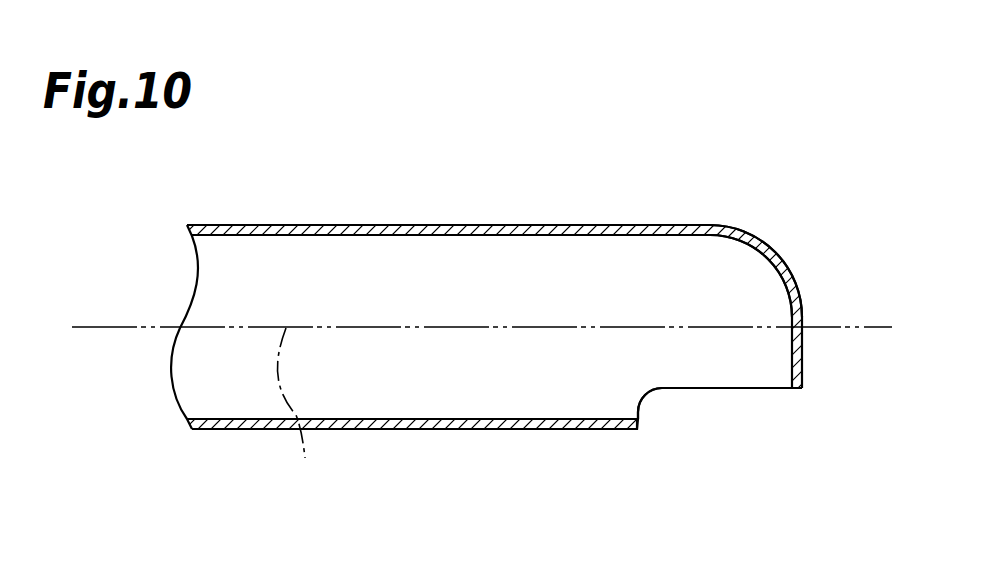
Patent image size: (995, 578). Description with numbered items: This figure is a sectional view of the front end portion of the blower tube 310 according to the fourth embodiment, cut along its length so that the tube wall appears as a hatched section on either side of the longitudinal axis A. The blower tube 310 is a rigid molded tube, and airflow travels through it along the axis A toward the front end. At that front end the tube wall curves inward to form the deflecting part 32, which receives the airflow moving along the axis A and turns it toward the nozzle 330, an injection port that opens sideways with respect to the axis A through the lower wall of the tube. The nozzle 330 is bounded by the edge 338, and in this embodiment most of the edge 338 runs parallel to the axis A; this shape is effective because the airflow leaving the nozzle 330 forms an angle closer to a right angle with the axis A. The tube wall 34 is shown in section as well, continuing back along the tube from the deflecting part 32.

The blower tube 310 is at (497, 303).
The side wall 34 is at (415, 225).
The deflecting part 32 is at (730, 229).
The nozzle 330 is at (720, 388).
The edge 338 is at (637, 424).
The longitudinal axis A is at (295, 413).